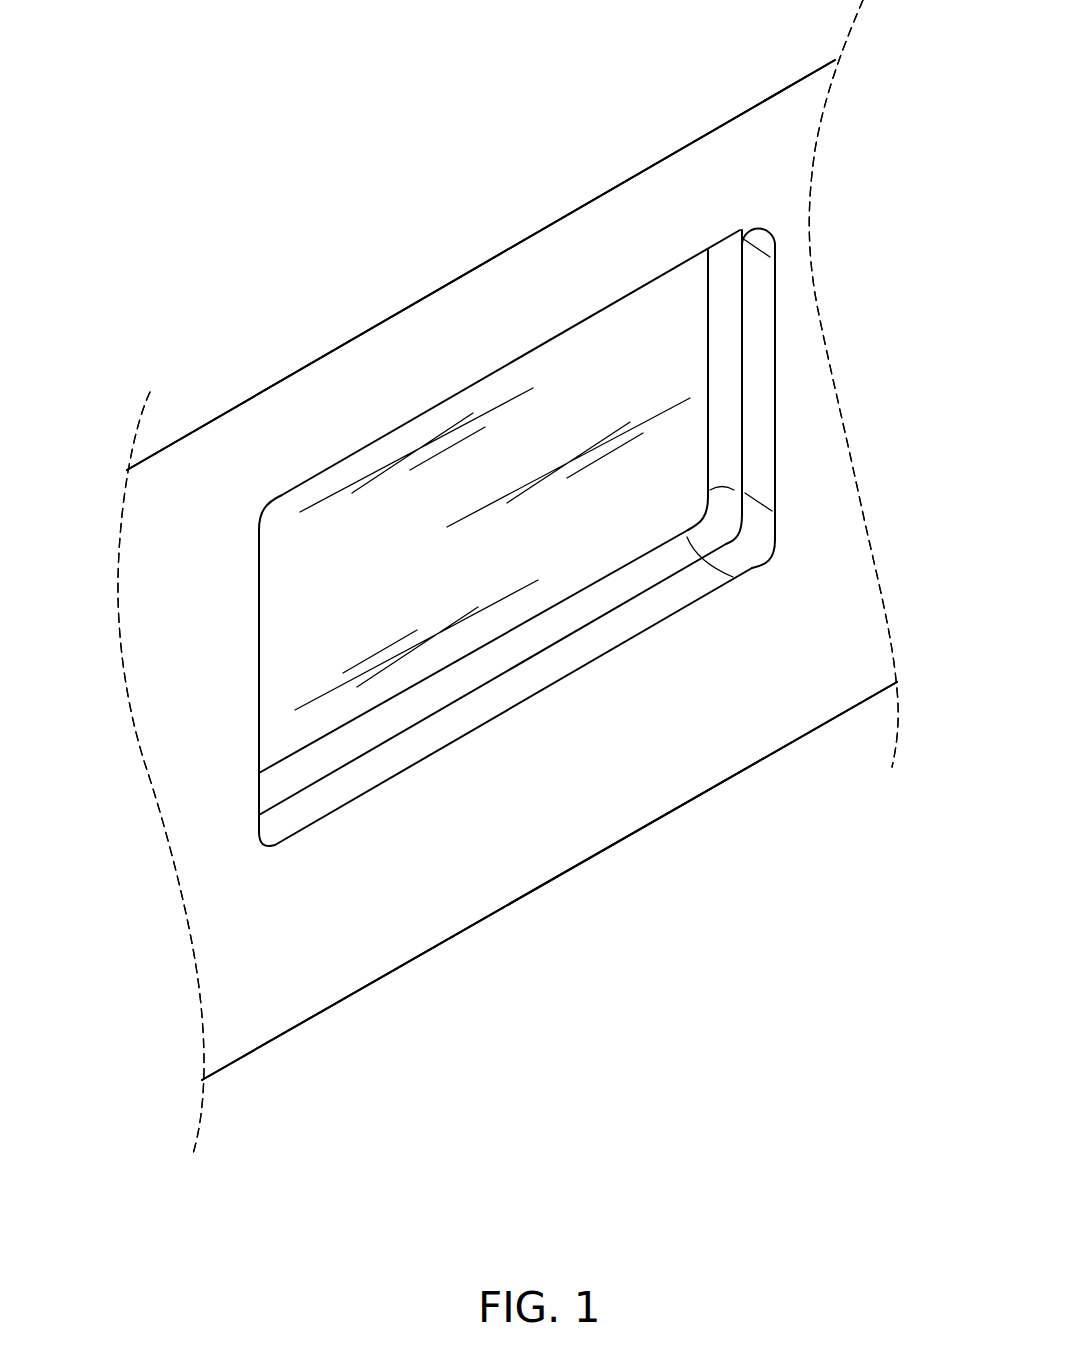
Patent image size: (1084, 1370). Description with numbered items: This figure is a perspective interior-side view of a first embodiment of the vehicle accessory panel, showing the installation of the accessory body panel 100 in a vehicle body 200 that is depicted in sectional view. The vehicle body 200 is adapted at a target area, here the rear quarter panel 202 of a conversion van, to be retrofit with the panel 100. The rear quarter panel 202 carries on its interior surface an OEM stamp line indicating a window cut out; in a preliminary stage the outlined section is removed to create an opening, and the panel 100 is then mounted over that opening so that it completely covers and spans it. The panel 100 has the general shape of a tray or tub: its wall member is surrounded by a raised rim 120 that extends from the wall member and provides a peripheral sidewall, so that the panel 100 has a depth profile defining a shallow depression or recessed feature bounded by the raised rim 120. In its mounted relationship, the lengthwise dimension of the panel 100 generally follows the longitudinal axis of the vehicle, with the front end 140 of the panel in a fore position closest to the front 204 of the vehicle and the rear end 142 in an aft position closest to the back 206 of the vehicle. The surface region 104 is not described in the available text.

The accessory body panel 100 is at (378, 501).
The panel surface 104 is at (597, 350).
The raised rim 120 is at (757, 321).
The front end 140 is at (272, 590).
The rear end 142 is at (686, 469).
The vehicle body 200 is at (147, 962).
The rear quarter panel 202 is at (273, 937).
The front of the vehicle 204 is at (53, 858).
The back of the vehicle 206 is at (949, 230).